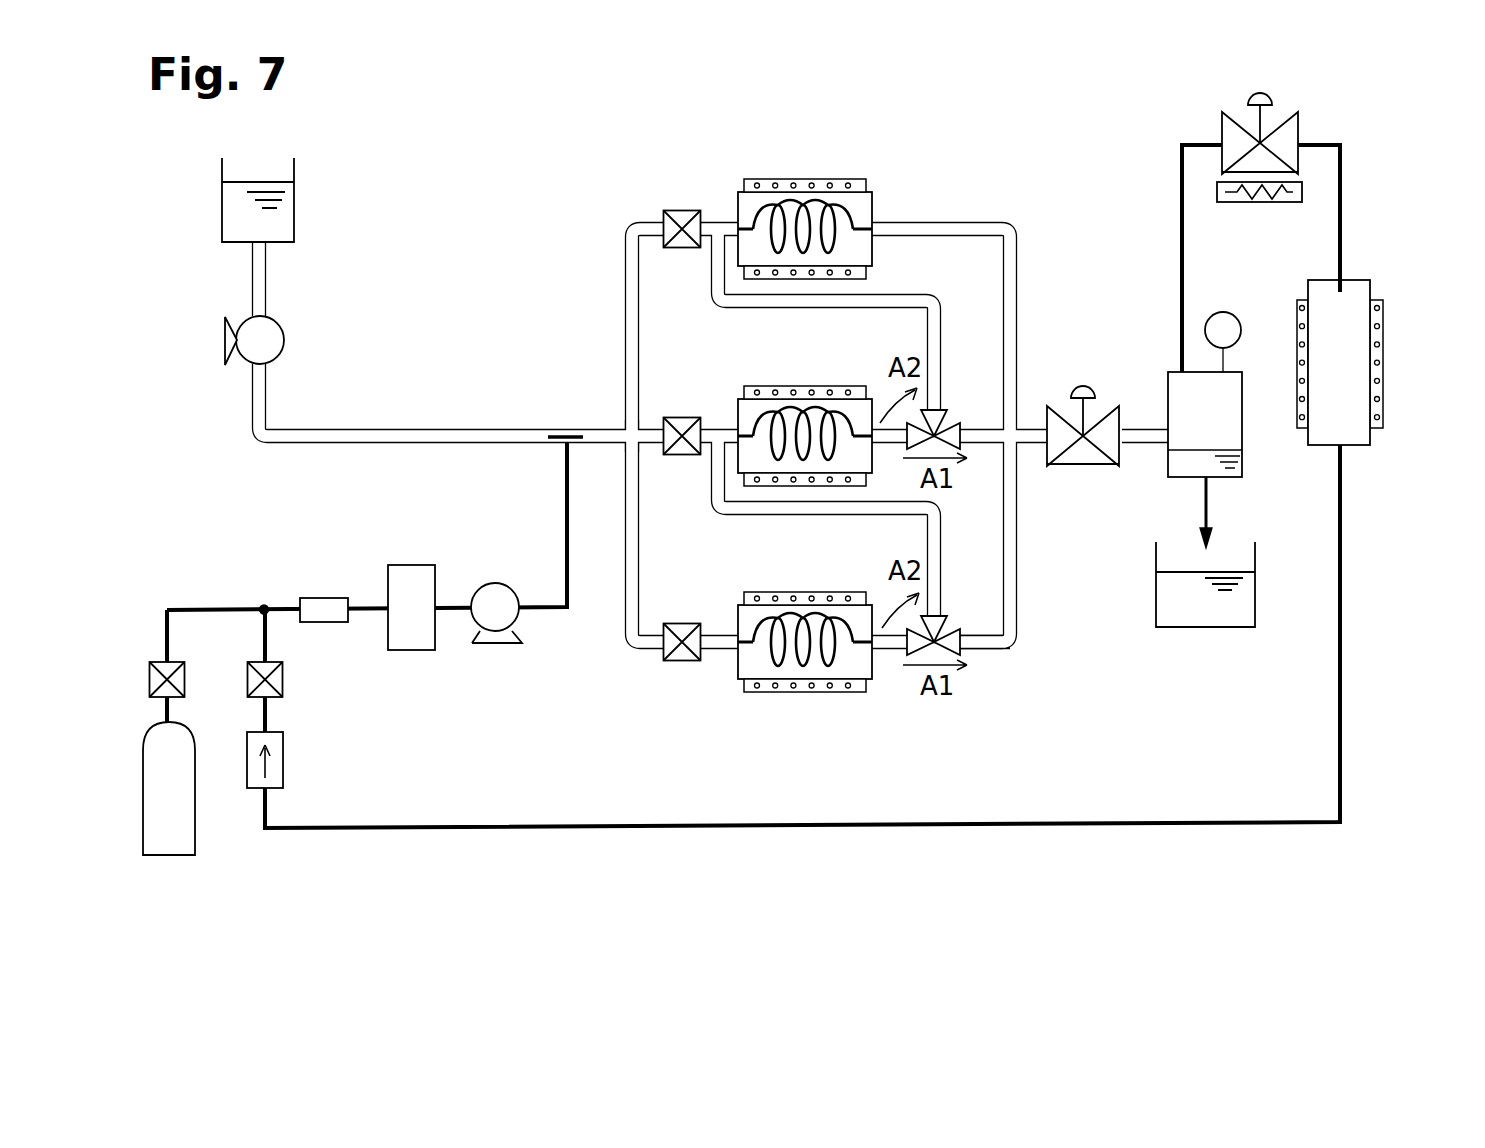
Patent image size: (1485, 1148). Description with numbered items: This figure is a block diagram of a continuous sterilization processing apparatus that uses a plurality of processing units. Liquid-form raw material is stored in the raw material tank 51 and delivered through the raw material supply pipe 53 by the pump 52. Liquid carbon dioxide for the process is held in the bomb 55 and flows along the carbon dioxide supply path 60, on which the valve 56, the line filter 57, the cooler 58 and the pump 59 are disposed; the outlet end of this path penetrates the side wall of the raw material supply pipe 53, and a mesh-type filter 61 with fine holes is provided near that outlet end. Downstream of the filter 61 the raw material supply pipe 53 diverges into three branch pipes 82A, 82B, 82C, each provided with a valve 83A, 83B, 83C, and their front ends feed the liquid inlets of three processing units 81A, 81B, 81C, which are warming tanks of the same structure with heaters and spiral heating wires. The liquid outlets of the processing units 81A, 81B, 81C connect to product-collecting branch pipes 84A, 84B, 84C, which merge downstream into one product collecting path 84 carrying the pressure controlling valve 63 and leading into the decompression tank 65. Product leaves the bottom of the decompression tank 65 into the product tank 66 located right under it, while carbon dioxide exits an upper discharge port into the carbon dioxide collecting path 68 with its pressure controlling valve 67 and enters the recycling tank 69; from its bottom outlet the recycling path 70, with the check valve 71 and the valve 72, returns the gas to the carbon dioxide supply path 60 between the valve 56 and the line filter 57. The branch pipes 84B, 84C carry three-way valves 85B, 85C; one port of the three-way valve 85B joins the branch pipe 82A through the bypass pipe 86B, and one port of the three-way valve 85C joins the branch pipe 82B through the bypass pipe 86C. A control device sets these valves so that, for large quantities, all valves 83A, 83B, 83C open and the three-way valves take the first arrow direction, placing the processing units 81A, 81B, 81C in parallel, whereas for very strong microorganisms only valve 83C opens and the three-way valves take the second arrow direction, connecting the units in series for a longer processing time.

The raw material tank 51 is at (294, 211).
The pump 52 is at (285, 334).
The raw material supply pipe 53 is at (456, 428).
The bomb 55 is at (172, 858).
The valve 56 is at (153, 657).
The line filter 57 is at (325, 597).
The cooler 58 is at (413, 653).
The pump 59 is at (500, 648).
The carbon dioxide supply path 60 is at (563, 532).
The mesh-type filter 61 is at (556, 428).
The pressure controlling valve 63 is at (1120, 402).
The decompression tank 65 is at (1272, 460).
The product tank 66 is at (1225, 655).
The pressure controlling valve 67 is at (1300, 125).
The carbon dioxide collecting path 68 is at (1178, 155).
The recycling tank 69 is at (1365, 280).
The recycling path 70 is at (876, 777).
The check valve 71 is at (285, 752).
The valve 72 is at (285, 678).
The processing unit 81A is at (803, 177).
The processing unit 81B is at (805, 385).
The processing unit 81C is at (795, 692).
The branch pipe 82A is at (613, 268).
The branch pipe 82B is at (625, 412).
The branch pipe 82C is at (632, 648).
The valve 83A is at (682, 210).
The valve 83B is at (684, 417).
The valve 83C is at (684, 623).
The product collecting path 84 is at (1148, 443).
The branch pipe 84A is at (958, 220).
The branch pipe 84B is at (985, 442).
The branch pipe 84C is at (992, 650).
The three-way valve 85B is at (948, 418).
The three-way valve 85C is at (948, 617).
The bypass pipe 86B is at (937, 295).
The bypass pipe 86C is at (822, 517).